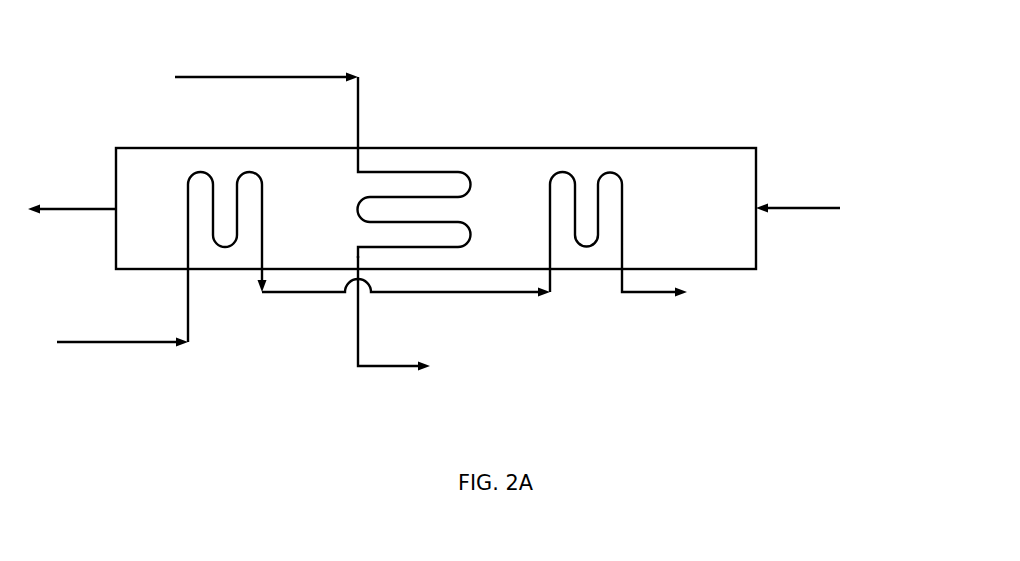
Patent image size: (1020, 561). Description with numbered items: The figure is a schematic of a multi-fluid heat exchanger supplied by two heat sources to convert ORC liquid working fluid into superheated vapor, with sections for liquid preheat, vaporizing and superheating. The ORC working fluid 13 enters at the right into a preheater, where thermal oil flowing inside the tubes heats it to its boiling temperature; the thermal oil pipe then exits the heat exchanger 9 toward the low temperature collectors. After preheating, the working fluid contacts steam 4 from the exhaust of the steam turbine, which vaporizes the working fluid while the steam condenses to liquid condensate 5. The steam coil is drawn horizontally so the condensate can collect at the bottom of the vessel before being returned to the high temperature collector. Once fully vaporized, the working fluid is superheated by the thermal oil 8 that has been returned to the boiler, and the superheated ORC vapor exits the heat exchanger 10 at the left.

The steam 4 is at (308, 155).
The condensate 5 is at (466, 313).
The thermal oil 8 is at (303, 266).
The thermal oil pipe exit 9 is at (696, 240).
The superheated ORC vapor exit 10 is at (72, 206).
The ORC working fluid 13 is at (834, 203).